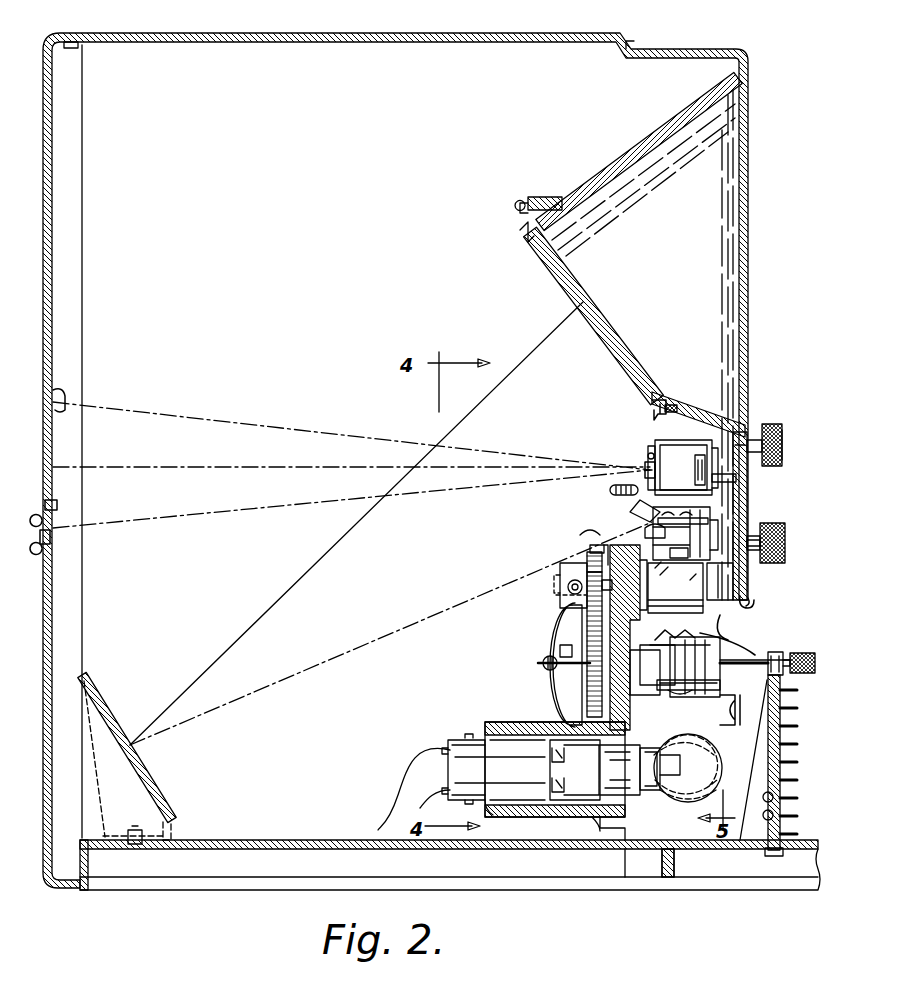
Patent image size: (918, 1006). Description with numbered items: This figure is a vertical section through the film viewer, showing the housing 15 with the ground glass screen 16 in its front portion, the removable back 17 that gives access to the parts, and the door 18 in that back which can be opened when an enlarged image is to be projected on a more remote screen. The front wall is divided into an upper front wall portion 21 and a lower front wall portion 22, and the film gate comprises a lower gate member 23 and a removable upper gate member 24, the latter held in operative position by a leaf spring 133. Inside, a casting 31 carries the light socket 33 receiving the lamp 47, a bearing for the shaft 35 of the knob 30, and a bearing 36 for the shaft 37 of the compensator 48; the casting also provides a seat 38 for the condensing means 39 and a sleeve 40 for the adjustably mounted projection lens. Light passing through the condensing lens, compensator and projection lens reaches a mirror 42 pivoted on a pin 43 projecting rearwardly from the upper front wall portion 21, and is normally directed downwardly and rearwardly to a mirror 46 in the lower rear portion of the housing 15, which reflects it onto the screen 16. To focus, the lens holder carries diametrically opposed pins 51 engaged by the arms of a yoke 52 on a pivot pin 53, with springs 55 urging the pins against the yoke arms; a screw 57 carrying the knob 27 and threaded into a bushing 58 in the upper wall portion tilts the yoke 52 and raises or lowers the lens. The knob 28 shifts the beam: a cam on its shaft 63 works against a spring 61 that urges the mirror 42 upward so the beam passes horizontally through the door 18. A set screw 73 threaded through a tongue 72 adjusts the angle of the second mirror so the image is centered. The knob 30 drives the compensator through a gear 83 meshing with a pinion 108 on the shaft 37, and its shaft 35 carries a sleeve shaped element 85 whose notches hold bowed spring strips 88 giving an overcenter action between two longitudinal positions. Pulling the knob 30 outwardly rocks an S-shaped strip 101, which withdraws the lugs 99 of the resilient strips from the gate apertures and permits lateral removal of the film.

The housing 15 is at (452, 26).
The ground glass screen 16 is at (610, 347).
The removable back 17 is at (53, 208).
The door 18 is at (55, 446).
The upper front wall portion 21 is at (748, 500).
The lower front wall portion 22 is at (785, 682).
The lower gate member 23 is at (750, 655).
The upper gate member 24 is at (754, 608).
The knob 27 is at (782, 540).
The knob 28 is at (776, 430).
The knob 30 is at (810, 653).
The casting 31 is at (625, 727).
The light socket 33 is at (500, 722).
The shaft 35 is at (560, 653).
The bearing 36 is at (597, 550).
The shaft 37 is at (593, 585).
The seat 38 is at (655, 690).
The condensing means 39 is at (720, 687).
The sleeve 40 is at (678, 555).
The mirror 42 is at (696, 461).
The pin 43 is at (736, 480).
The mirror 46 is at (165, 797).
The lamp 47 is at (715, 758).
The compensator 48 is at (675, 587).
The pins 51 is at (658, 521).
The yoke 52 is at (676, 536).
The pivot pin 53 is at (685, 536).
The springs 55 is at (645, 512).
The screw 57 is at (719, 581).
The bushing 58 is at (762, 555).
The spring 61 is at (695, 474).
The shaft 63 is at (742, 438).
The tongue 72 is at (648, 470).
The set screw 73 is at (612, 492).
The gear 83 is at (590, 684).
The sleeve shaped element 85 is at (543, 665).
The spring strips 88 is at (557, 638).
The lug 99 is at (705, 633).
The S-shaped strip 101 is at (744, 711).
The pinion 108 is at (590, 558).
The leaf spring 133 is at (732, 631).